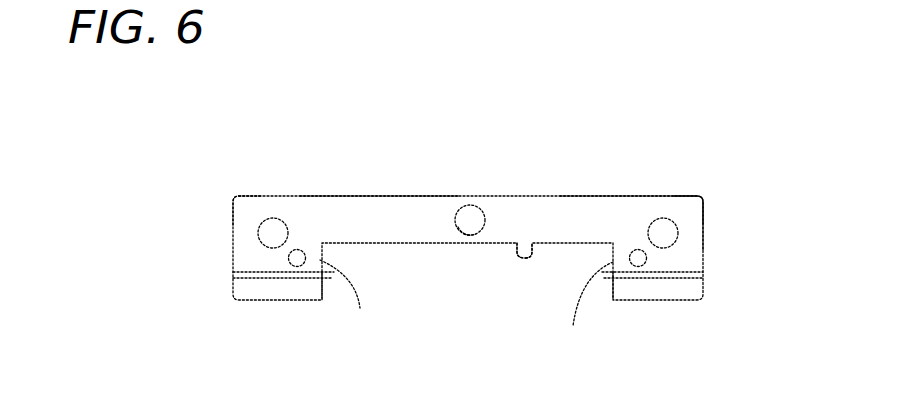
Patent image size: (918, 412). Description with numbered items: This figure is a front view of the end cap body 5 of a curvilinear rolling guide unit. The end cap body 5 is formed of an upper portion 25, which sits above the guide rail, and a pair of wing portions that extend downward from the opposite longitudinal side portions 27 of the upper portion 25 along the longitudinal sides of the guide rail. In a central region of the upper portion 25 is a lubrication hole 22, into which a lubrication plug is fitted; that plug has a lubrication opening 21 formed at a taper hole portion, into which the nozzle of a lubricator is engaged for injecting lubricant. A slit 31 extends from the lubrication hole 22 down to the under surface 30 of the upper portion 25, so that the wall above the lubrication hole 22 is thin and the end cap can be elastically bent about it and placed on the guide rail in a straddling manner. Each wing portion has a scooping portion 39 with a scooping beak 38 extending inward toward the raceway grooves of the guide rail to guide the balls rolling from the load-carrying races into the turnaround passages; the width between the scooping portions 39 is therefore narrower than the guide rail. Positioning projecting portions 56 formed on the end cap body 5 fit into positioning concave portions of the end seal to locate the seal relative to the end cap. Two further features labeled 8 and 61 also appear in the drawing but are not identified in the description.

The end cap body 5 is at (577, 197).
The bracket body 8 is at (608, 212).
The lubrication opening 21 is at (463, 232).
The lubrication hole 22 is at (471, 205).
The upper portion 25 is at (377, 217).
The longitudinal side portions 27 is at (245, 212).
The under surface 30 is at (530, 249).
The slit 31 is at (466, 237).
The scooping beaks 38 is at (466, 310).
The scooping portions 39 is at (330, 279).
The positioning projecting portions 56 is at (295, 265).
The mounting hole 61 is at (273, 233).